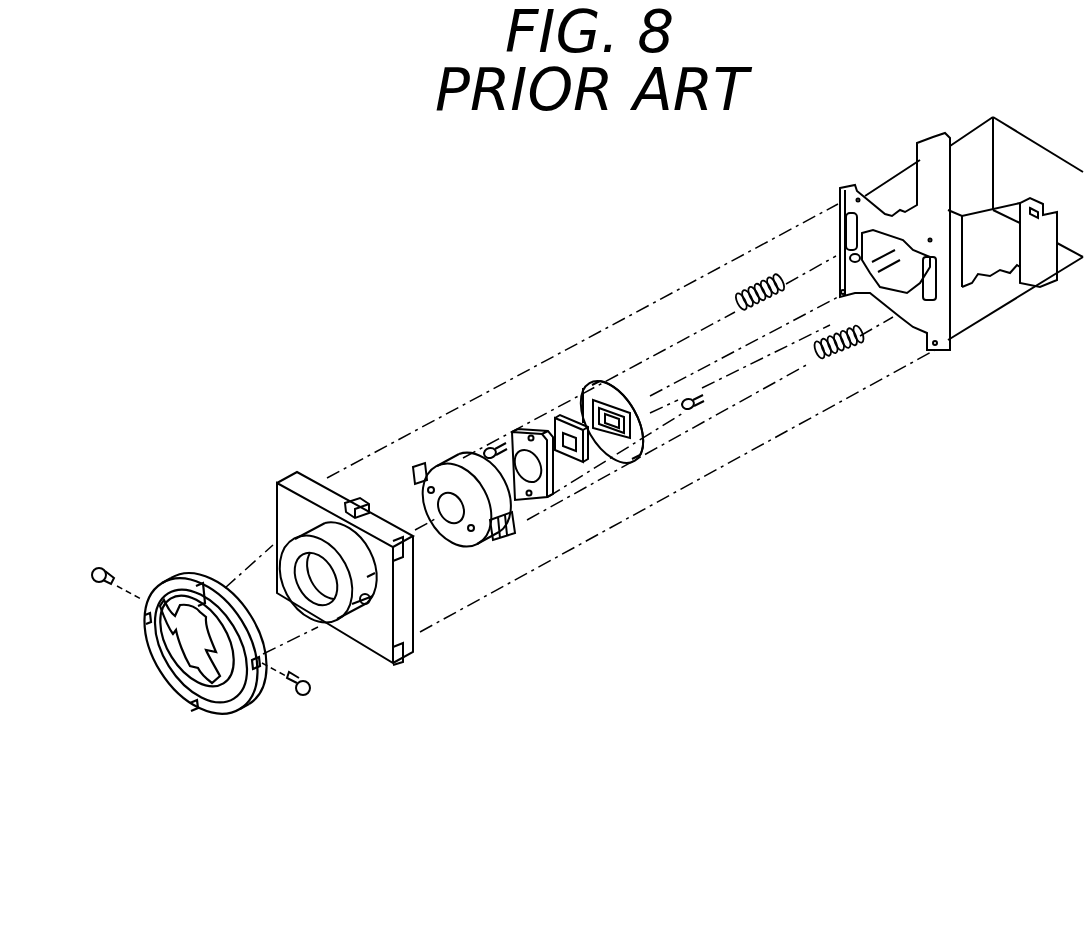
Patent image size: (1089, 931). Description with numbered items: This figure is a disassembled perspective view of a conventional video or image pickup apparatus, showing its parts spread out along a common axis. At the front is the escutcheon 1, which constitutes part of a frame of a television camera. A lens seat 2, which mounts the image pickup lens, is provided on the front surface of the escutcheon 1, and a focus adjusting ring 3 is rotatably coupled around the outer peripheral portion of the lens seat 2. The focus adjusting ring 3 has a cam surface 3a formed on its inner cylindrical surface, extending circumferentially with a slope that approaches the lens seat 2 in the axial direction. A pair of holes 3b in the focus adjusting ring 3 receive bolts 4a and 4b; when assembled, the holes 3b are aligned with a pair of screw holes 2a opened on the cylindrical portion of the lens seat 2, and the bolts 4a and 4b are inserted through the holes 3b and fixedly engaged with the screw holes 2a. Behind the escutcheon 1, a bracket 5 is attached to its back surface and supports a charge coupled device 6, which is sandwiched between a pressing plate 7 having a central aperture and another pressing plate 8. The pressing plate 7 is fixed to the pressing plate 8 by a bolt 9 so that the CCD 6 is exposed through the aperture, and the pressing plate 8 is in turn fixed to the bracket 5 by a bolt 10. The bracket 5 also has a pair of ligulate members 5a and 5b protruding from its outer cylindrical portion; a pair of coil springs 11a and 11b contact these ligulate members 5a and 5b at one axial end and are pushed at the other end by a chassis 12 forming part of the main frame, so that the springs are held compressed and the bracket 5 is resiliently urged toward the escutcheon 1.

The escutcheon 1 is at (407, 580).
The lens seat 2 is at (313, 523).
The screw holes 2a is at (371, 599).
The focus adjusting ring 3 is at (232, 698).
The cam surface 3a is at (168, 657).
The holes 3b is at (262, 663).
The bolt 4a is at (104, 567).
The bolt 4b is at (308, 698).
The bracket 5 is at (470, 540).
The ligulate member 5a is at (417, 463).
The ligulate member 5b is at (512, 523).
The charge coupled device (CCD) 6 is at (588, 462).
The pressing plate 7 is at (548, 495).
The pressing plate 8 is at (640, 447).
The bolt 9 is at (487, 447).
The bolt 10 is at (700, 405).
The coil spring 11a is at (848, 350).
The coil spring 11b is at (755, 280).
The chassis 12 is at (995, 300).